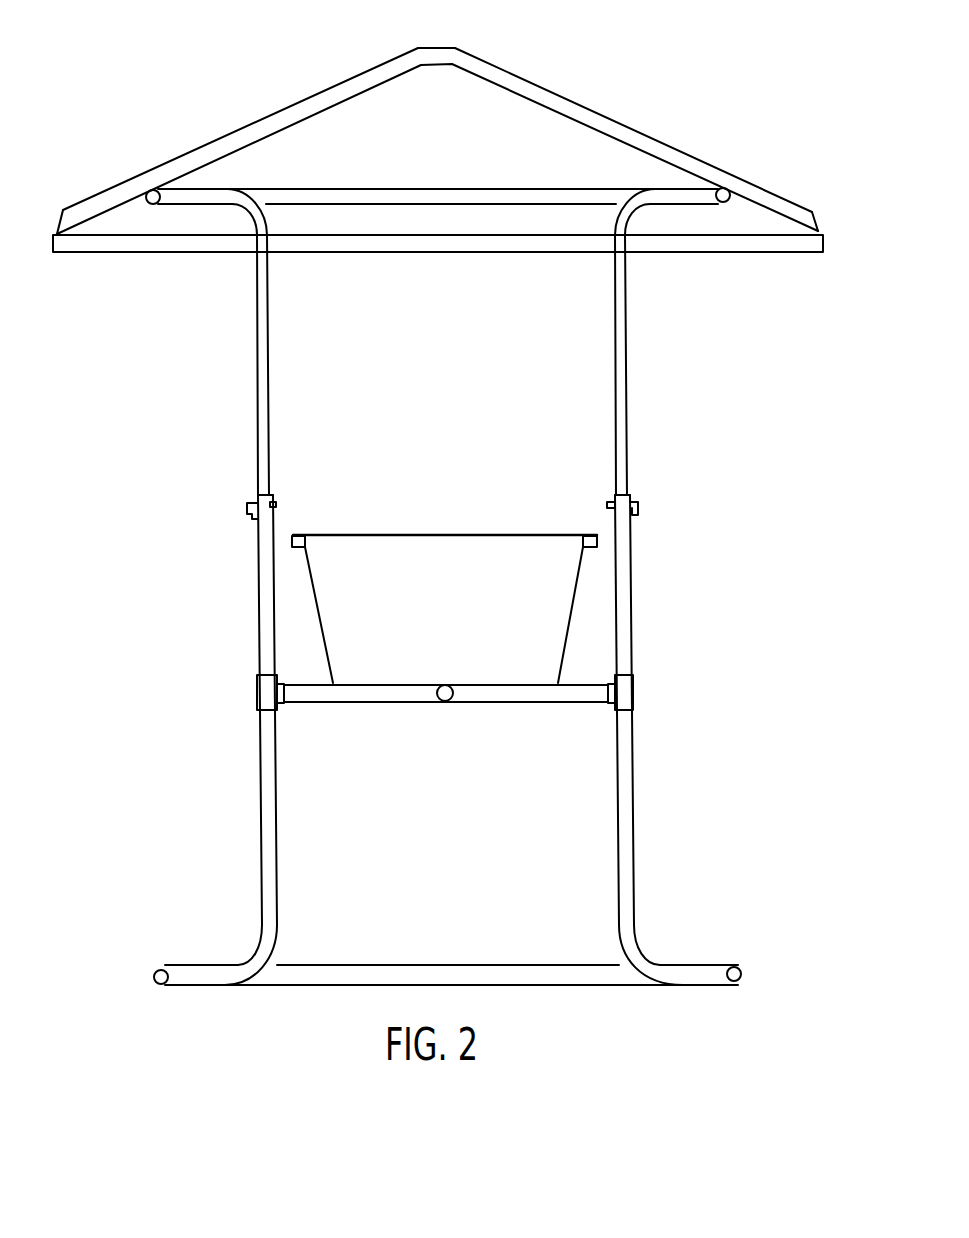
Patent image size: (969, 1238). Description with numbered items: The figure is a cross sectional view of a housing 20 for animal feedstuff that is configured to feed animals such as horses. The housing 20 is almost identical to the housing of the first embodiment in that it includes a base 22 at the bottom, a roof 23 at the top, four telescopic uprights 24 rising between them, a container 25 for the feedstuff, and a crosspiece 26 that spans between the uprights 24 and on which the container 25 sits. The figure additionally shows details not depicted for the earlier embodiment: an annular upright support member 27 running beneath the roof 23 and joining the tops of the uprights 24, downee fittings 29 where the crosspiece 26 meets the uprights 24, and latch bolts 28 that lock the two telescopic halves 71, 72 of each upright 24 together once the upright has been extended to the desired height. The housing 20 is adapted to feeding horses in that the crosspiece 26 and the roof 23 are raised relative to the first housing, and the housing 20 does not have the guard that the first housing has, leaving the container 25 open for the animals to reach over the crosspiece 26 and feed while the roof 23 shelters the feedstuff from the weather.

The housing 20 is at (174, 1011).
The base 22 is at (313, 970).
The roof 23 is at (620, 123).
The telescopic uprights 24 is at (250, 420).
The container 25 is at (553, 598).
The crosspiece 26 is at (566, 697).
The annular upright support member 27 is at (275, 193).
The latch bolts 28 is at (248, 510).
The downee fittings 29 is at (257, 700).
The telescopic half 71 is at (263, 312).
The telescopic half 72 is at (265, 622).